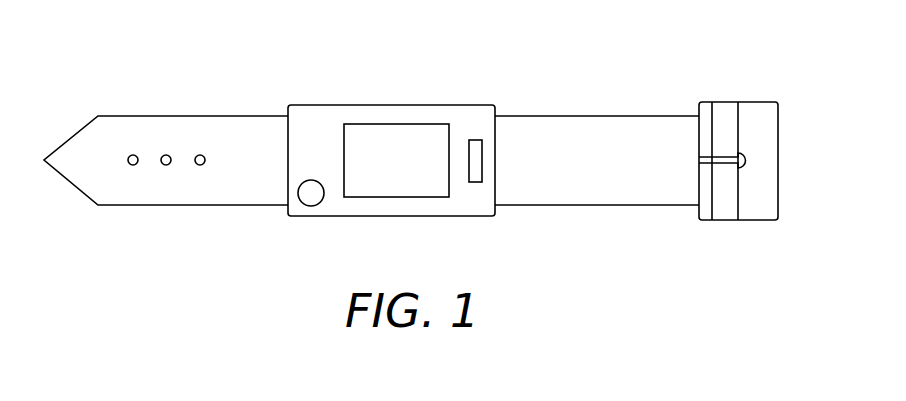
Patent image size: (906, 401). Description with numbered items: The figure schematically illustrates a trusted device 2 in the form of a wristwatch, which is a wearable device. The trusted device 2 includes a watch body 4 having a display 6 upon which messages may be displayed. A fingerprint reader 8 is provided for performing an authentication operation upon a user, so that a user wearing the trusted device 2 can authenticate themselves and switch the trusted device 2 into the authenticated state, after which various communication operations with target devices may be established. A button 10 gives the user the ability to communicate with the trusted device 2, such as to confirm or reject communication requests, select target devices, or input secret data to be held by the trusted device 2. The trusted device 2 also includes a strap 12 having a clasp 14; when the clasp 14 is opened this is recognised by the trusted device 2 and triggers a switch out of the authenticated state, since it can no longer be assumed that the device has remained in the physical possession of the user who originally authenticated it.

The trusted device 2 is at (578, 47).
The watch body 4 is at (302, 105).
The display 6 is at (430, 124).
The fingerprint reader 8 is at (483, 157).
The button 10 is at (311, 207).
The strap 12 is at (189, 116).
The clasp 14 is at (750, 102).